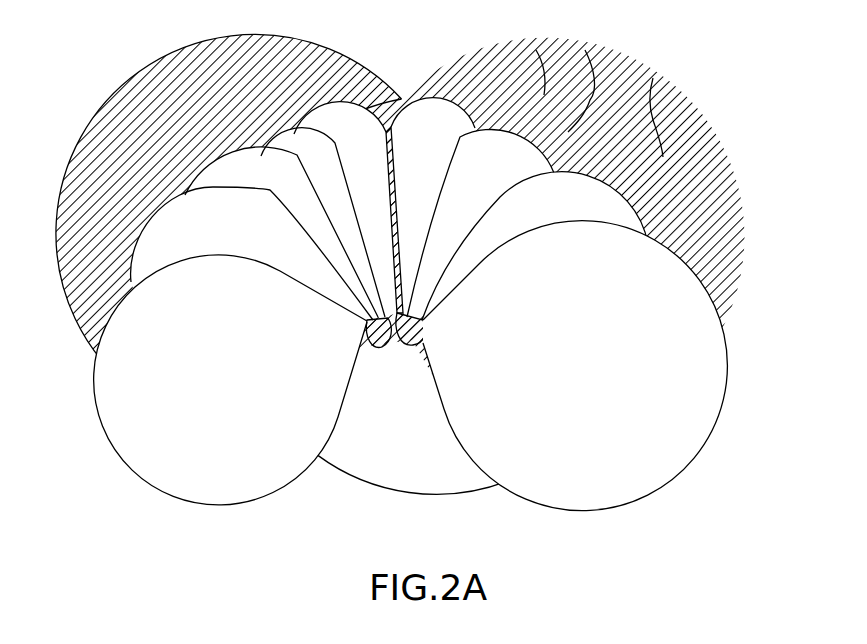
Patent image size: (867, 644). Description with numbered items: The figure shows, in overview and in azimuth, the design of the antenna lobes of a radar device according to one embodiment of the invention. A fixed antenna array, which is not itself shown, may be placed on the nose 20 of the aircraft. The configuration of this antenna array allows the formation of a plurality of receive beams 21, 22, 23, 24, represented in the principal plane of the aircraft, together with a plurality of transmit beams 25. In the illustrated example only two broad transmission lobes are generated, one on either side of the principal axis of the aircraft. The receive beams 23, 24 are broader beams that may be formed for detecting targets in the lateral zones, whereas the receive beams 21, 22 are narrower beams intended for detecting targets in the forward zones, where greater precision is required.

The nose 20 is at (395, 437).
The receive beam 21 is at (437, 123).
The receive beam 22 is at (513, 160).
The receive beam 23 is at (573, 213).
The receive beam 24 is at (620, 440).
The transmit beams 25 is at (457, 58).